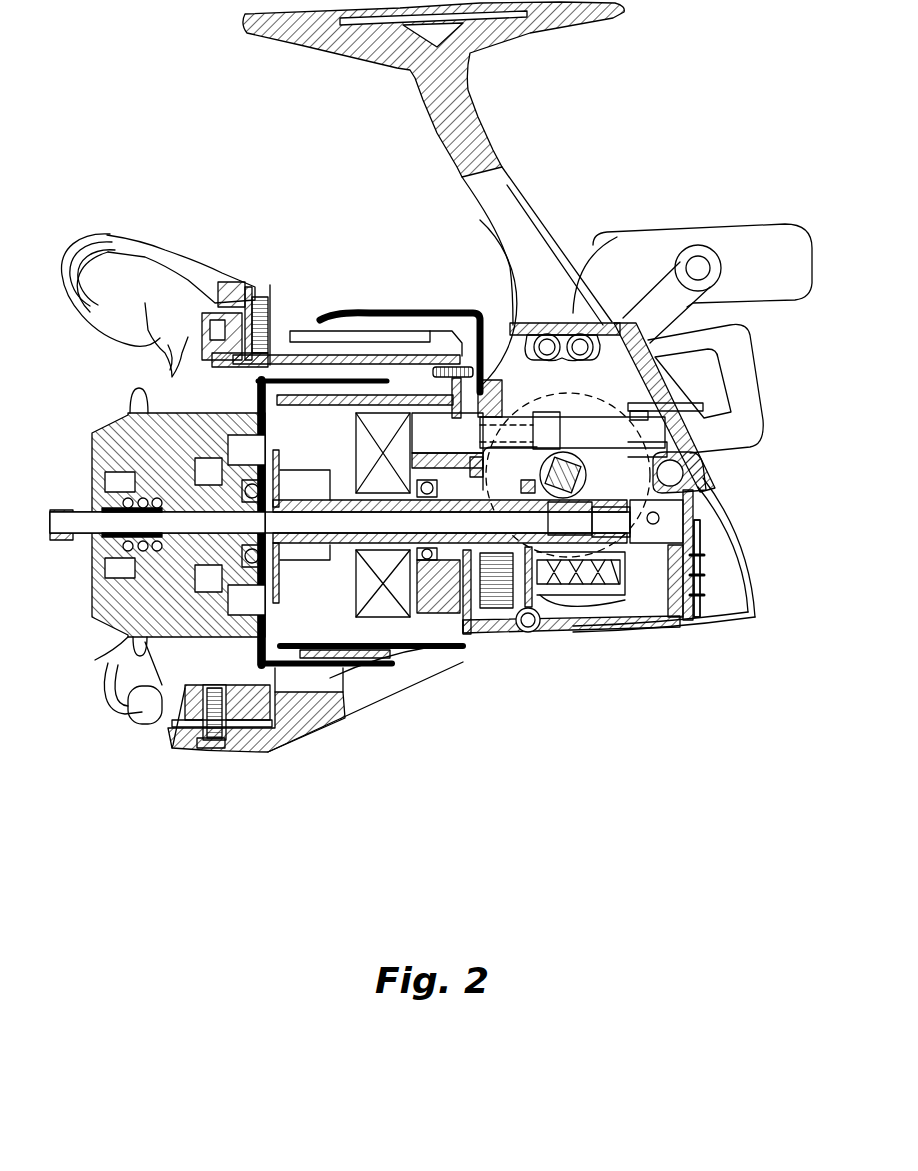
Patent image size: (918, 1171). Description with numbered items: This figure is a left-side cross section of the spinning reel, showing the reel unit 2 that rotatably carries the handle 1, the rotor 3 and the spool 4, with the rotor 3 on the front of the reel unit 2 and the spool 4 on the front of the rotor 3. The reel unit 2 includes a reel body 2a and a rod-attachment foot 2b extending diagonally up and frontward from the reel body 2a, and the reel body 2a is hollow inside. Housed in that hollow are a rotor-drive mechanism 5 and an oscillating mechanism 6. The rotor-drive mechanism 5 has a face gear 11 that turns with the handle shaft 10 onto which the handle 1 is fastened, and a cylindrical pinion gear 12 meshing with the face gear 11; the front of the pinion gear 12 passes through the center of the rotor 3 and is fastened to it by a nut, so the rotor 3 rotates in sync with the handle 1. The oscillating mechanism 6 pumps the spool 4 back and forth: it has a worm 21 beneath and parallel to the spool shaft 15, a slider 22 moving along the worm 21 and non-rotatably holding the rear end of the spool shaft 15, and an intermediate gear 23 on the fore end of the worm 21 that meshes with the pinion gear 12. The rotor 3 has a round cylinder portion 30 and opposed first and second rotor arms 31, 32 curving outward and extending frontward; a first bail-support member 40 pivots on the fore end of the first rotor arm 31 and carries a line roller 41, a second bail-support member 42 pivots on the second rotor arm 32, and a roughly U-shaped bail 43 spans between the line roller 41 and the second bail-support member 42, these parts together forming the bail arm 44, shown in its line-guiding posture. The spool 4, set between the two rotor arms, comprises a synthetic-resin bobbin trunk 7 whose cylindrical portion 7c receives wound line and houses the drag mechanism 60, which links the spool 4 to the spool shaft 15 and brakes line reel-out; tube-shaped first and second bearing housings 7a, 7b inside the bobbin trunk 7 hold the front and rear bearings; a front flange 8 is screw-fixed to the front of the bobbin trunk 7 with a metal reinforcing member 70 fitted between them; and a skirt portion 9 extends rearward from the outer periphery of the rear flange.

The handle 1 is at (670, 282).
The reel unit 2 is at (748, 508).
The reel body 2a is at (710, 473).
The rod-attachment foot 2b is at (523, 182).
The rotor 3 is at (362, 652).
The spool 4 is at (228, 640).
The rotor-drive mechanism 5 is at (597, 455).
The oscillating mechanism 6 is at (585, 608).
The bobbin trunk 7 is at (245, 643).
The first bearing housing 7a is at (176, 720).
The second bearing housing 7b is at (262, 752).
The cylindrical portion 7c is at (252, 452).
The front flange 8 is at (110, 665).
The skirt portion 9 is at (103, 628).
The handle shaft 10 is at (540, 337).
The face gear 11 is at (600, 630).
The pinion gear 12 is at (468, 615).
The spool shaft 15 is at (643, 557).
The worm 21 is at (620, 620).
The slider 22 is at (700, 607).
The intermediate gear 23 is at (499, 691).
The round cylinder portion 30 is at (388, 650).
The first rotor arm 31 is at (302, 320).
The second rotor arm 32 is at (284, 738).
The first bail-support member 40 is at (190, 273).
The line roller 41 is at (63, 262).
The second bail-support member 42 is at (163, 720).
The bail 43 is at (177, 363).
The bail arm 44 is at (115, 354).
The drag mechanism 60 is at (116, 708).
The reinforcing member 70 is at (107, 447).